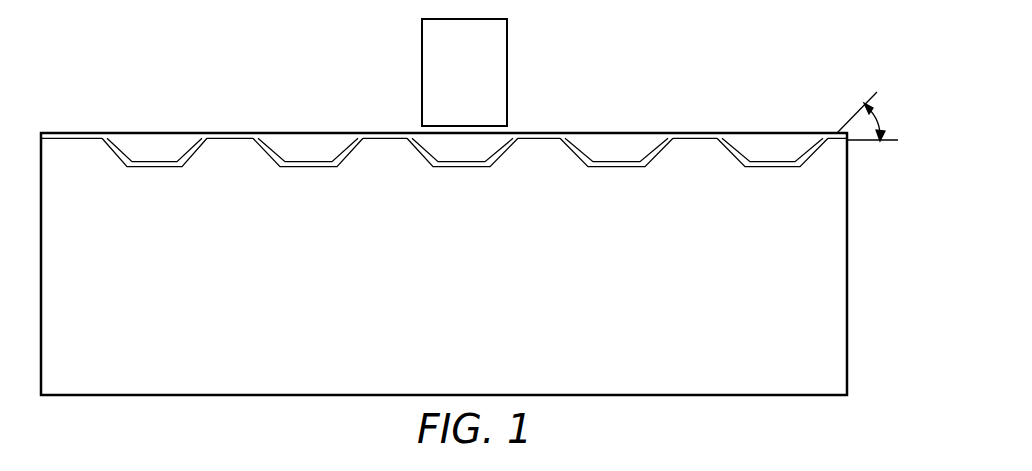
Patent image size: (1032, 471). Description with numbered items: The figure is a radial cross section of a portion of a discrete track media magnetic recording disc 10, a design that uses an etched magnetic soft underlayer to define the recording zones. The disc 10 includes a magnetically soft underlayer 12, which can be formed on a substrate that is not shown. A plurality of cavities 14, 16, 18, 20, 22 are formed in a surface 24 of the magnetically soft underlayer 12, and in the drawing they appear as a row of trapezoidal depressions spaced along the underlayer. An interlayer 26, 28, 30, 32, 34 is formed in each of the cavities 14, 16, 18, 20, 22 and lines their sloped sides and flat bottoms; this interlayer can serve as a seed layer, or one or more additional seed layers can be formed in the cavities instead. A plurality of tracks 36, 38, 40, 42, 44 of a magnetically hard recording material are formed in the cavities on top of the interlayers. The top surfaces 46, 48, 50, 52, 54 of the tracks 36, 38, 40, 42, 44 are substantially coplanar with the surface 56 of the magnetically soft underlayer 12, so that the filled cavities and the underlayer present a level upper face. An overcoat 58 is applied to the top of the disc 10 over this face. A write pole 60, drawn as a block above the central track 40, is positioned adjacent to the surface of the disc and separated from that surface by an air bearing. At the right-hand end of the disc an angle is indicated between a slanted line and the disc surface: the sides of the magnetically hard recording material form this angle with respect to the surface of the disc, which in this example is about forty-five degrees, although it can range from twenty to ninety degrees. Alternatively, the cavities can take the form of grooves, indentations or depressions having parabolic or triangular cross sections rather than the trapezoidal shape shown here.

The magnetic recording disc 10 is at (815, 65).
The magnetically soft underlayer 12 is at (466, 264).
The cavity 14 is at (154, 149).
The cavity 16 is at (308, 155).
The cavity 18 is at (459, 155).
The cavity 20 is at (616, 152).
The cavity 22 is at (772, 150).
The surface of the magnetically soft underlayer 24 is at (60, 133).
The interlayer 26 is at (154, 149).
The interlayer 28 is at (308, 155).
The interlayer 30 is at (459, 155).
The interlayer 32 is at (616, 152).
The interlayer 34 is at (772, 150).
The track 36 is at (154, 149).
The track 38 is at (308, 155).
The track 40 is at (459, 155).
The track 42 is at (616, 152).
The track 44 is at (772, 150).
The top surface of the track 46 is at (140, 167).
The top surface of the track 48 is at (290, 168).
The top surface of the track 50 is at (445, 167).
The top surface of the track 52 is at (600, 167).
The top surface of the track 54 is at (752, 170).
The surface of the magnetically soft underlayer 56 is at (444, 105).
The overcoat 58 is at (847, 290).
The write pole 60 is at (497, 40).